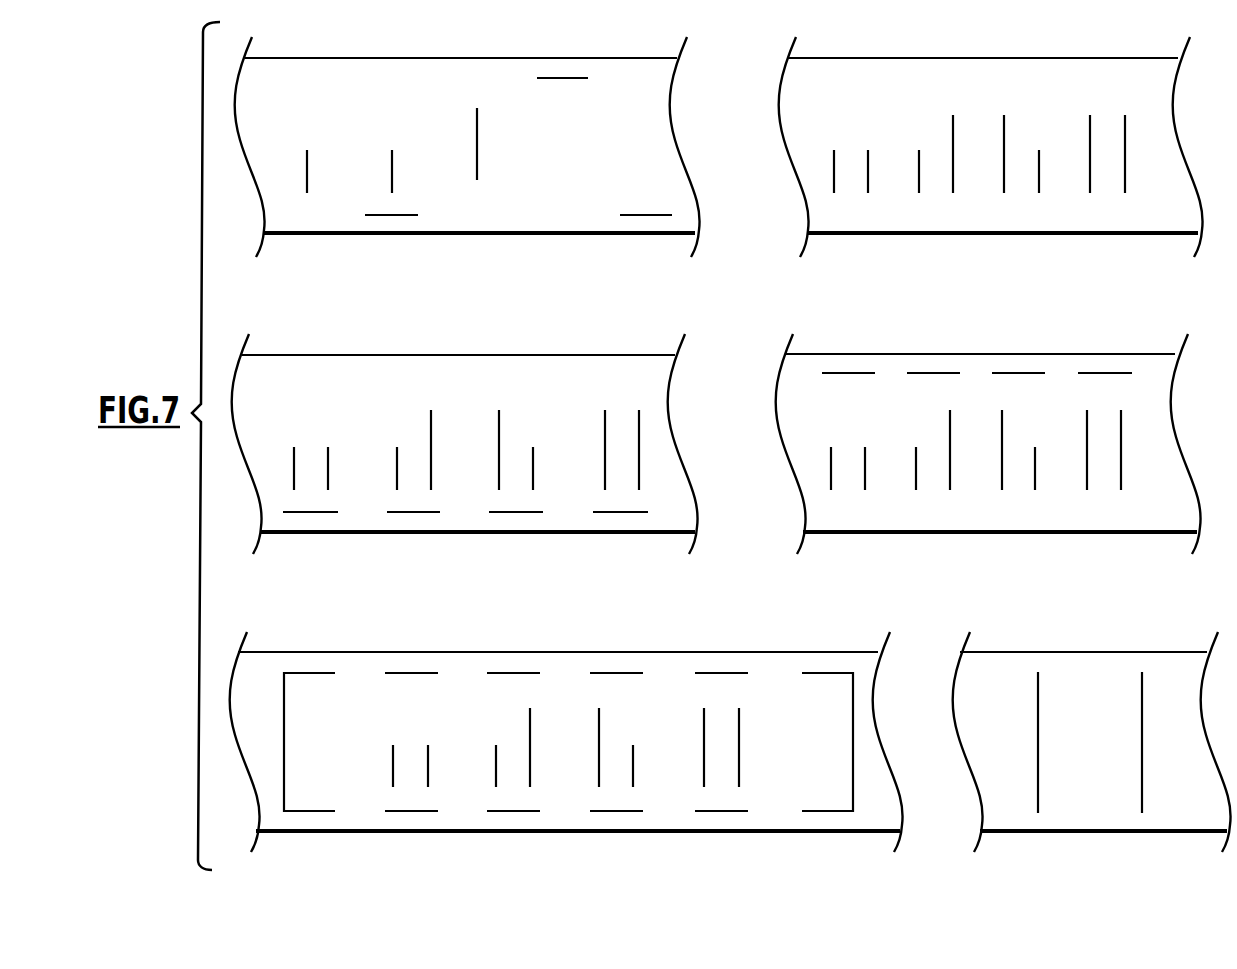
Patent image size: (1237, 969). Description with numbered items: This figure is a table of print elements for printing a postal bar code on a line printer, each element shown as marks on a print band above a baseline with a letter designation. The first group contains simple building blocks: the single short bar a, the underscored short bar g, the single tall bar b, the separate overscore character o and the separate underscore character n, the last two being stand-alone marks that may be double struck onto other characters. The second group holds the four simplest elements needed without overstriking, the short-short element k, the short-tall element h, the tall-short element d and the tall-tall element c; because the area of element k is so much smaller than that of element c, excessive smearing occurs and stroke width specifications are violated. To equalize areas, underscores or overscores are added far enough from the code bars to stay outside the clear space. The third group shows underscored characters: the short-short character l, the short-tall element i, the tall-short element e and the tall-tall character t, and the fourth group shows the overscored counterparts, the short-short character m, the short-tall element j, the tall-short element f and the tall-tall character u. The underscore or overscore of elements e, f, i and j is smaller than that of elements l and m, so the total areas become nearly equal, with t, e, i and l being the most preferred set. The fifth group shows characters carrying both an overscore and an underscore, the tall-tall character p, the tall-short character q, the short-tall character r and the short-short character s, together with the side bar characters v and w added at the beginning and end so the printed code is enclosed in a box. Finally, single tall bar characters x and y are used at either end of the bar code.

The code symbol for letter a is at (307, 222).
The code symbol for letter g is at (392, 222).
The code symbol for letter b is at (477, 222).
The separate underscore character n is at (562, 222).
The separate overscore character o is at (647, 222).
The short-short bar print element k is at (851, 222).
The short-tall bar print element h is at (936, 222).
The tall-short bar print element d is at (1021, 222).
The tall-tall bar print element c is at (1106, 222).
The underscored short-short bar character l is at (311, 521).
The underscored short-tall bar print element i is at (413, 521).
The underscored tall-short bar print element e is at (516, 521).
The underscored tall-tall bar character t is at (622, 521).
The overscored short-short bar character m is at (848, 521).
The overscored short-tall bar print element j is at (933, 521).
The overscored tall-short bar print element f is at (1018, 521).
The overscored tall-tall bar character u is at (1103, 521).
The beginning side bar character v is at (307, 820).
The overscored and underscored short-short bar character s is at (411, 820).
The overscored and underscored short-tall bar character r is at (513, 820).
The overscored and underscored tall-short bar character q is at (617, 820).
The overscored and underscored tall-tall bar character p is at (722, 820).
The end side bar character w is at (826, 820).
The single tall bar character x is at (1038, 820).
The single tall bar character y is at (1142, 820).